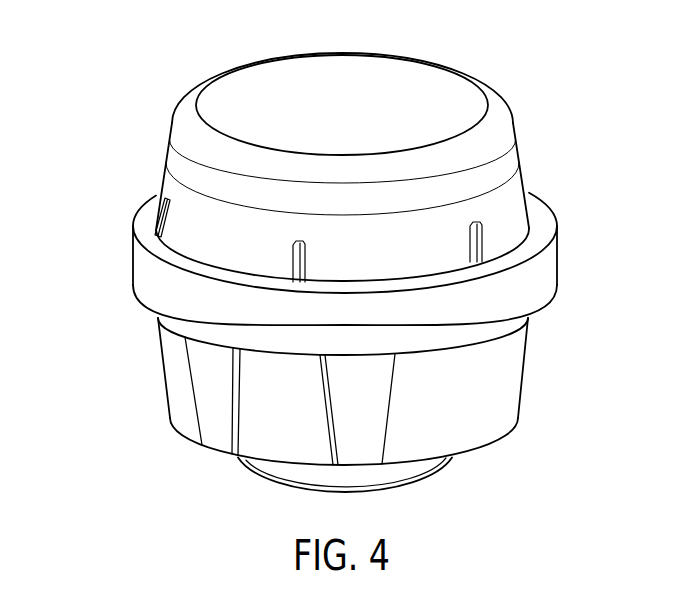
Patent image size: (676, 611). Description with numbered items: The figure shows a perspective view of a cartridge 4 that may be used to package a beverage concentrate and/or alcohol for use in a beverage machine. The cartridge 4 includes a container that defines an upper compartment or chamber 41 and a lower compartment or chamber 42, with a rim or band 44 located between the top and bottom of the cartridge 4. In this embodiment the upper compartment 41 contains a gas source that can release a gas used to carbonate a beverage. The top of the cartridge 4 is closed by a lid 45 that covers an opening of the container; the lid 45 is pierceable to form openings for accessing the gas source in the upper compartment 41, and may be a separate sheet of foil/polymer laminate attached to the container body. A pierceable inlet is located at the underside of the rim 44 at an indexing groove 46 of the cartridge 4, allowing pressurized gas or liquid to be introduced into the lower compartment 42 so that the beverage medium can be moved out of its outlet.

The cartridge 4 is at (76, 142).
The upper compartment or chamber 41 is at (510, 160).
The lower compartment or chamber 42 is at (507, 378).
The rim or band 44 is at (548, 262).
The lid 45 is at (403, 66).
The indexing groove 46 is at (268, 432).